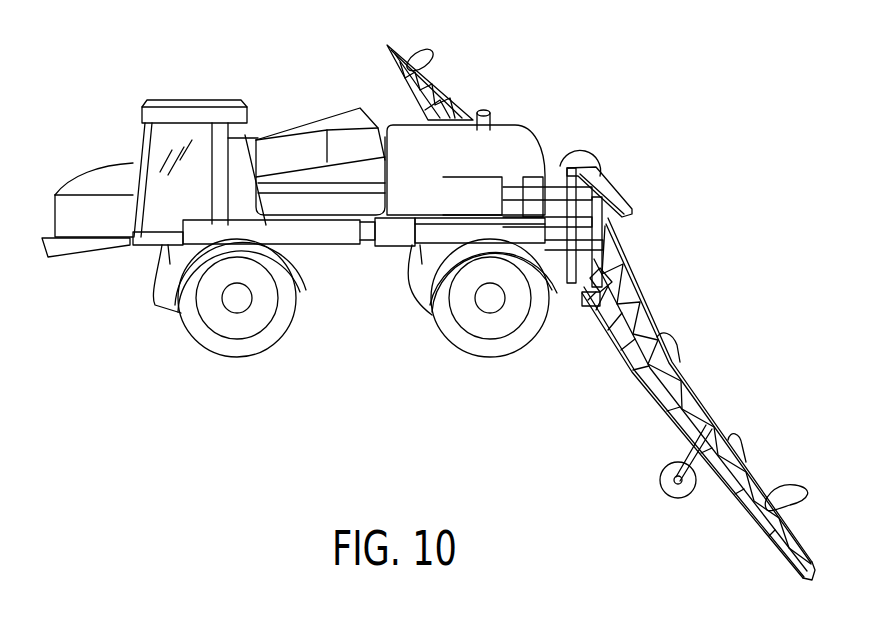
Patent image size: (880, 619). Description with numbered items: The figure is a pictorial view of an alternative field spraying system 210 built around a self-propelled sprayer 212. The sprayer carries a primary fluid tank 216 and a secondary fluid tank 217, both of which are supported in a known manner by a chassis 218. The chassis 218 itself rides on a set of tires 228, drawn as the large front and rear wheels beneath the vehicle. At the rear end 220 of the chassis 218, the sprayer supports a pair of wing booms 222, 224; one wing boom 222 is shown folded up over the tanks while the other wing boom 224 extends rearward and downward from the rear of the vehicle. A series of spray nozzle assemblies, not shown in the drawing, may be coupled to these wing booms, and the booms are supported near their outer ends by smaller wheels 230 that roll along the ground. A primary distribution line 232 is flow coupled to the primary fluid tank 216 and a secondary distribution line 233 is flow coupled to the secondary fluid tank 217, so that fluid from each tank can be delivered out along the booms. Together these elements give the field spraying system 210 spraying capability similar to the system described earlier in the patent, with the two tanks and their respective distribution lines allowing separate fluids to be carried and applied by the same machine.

The field spraying system 210 is at (256, 81).
The self-propelled sprayer 212 is at (119, 182).
The primary fluid tank 216 is at (525, 152).
The secondary fluid tank 217 is at (548, 186).
The chassis 218 is at (337, 240).
The rear end 220 is at (560, 297).
The wing boom 222 is at (435, 90).
The wing boom 224 is at (675, 363).
The tires 228 is at (182, 312).
The wheels 230 is at (680, 490).
The primary distribution line 232 is at (608, 280).
The secondary distribution line 233 is at (425, 110).